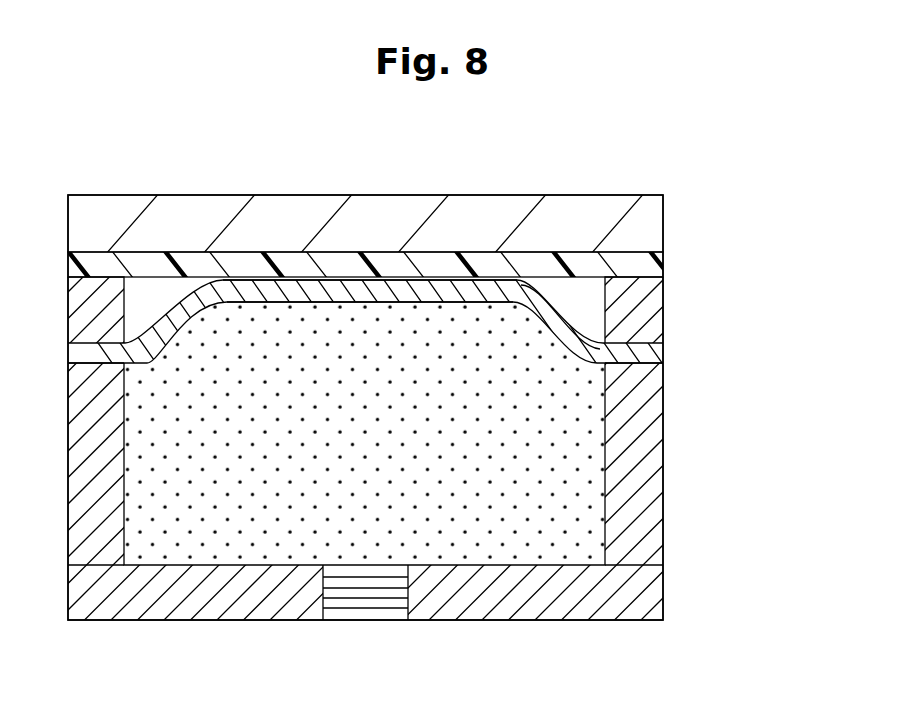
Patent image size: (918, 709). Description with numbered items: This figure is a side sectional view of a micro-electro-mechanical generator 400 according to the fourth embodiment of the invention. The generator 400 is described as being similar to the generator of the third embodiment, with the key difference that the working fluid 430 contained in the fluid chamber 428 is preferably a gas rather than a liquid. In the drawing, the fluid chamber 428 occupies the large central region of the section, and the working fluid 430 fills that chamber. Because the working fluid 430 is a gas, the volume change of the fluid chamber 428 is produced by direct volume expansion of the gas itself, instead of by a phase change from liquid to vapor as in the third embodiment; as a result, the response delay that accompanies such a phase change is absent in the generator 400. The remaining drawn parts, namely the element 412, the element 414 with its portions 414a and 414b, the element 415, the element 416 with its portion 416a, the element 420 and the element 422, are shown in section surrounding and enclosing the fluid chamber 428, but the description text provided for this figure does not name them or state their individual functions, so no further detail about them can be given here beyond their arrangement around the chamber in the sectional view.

The micro-electro-mechanical generator 400 is at (600, 190).
The vent plug 412 is at (365, 602).
The housing 414 is at (756, 583).
The housing base 414a is at (577, 602).
The housing side wall 414b is at (633, 512).
The spacer ring 415 is at (641, 318).
The elastic diaphragm 416 is at (645, 355).
The diaphragm pressure-receiving portion 416a is at (341, 287).
The adhesive layer 420 is at (640, 266).
The cover plate 422 is at (637, 226).
The fluid chamber 428 is at (565, 398).
The working fluid 430 is at (513, 490).